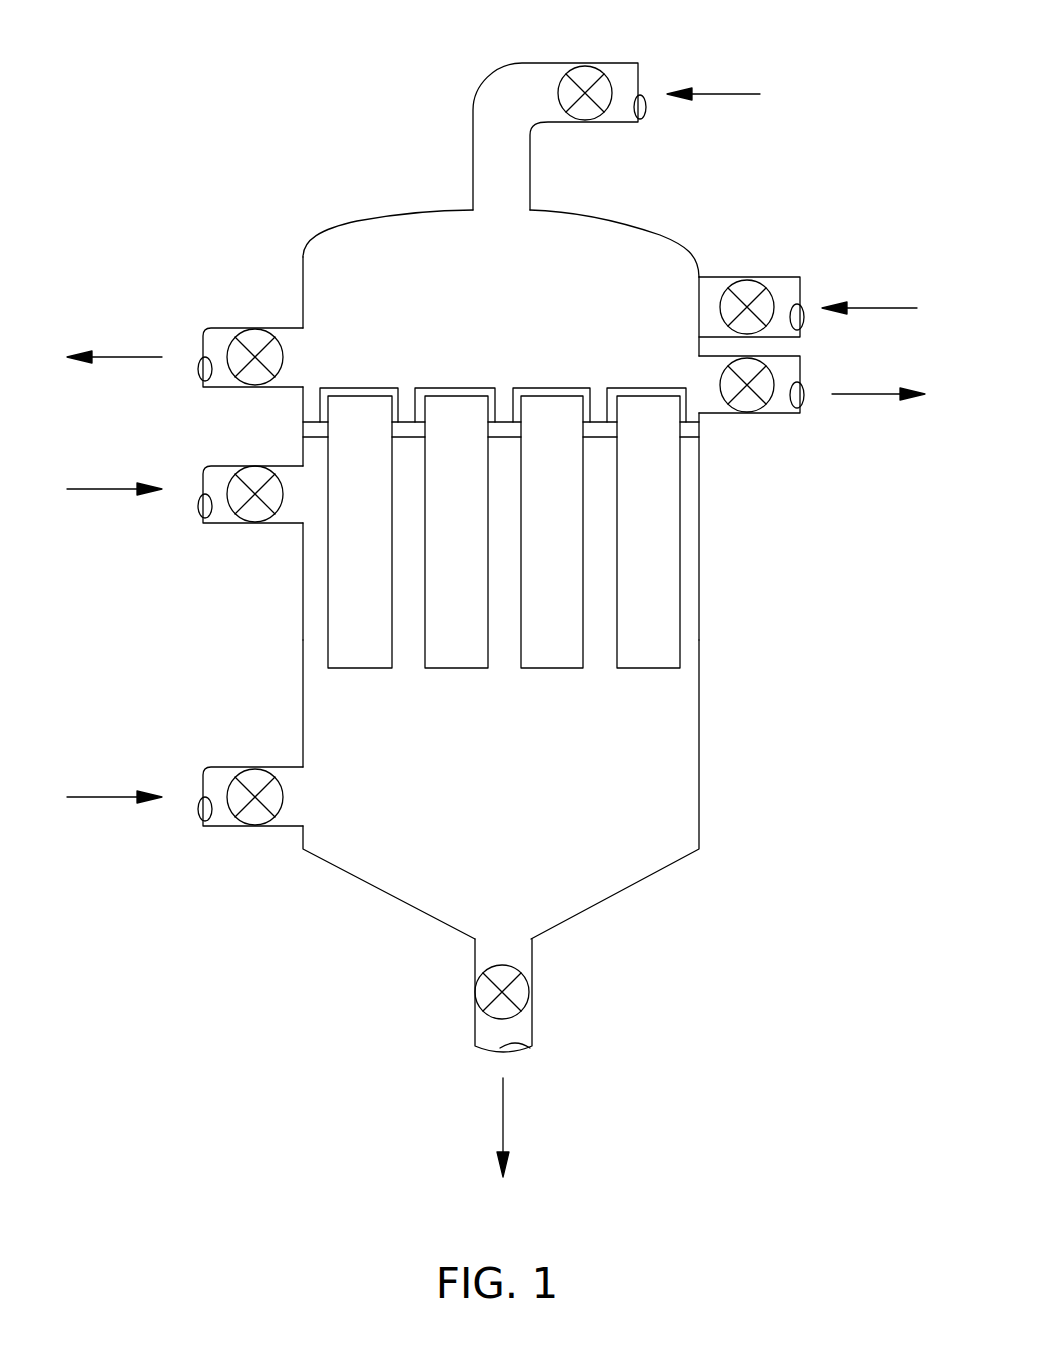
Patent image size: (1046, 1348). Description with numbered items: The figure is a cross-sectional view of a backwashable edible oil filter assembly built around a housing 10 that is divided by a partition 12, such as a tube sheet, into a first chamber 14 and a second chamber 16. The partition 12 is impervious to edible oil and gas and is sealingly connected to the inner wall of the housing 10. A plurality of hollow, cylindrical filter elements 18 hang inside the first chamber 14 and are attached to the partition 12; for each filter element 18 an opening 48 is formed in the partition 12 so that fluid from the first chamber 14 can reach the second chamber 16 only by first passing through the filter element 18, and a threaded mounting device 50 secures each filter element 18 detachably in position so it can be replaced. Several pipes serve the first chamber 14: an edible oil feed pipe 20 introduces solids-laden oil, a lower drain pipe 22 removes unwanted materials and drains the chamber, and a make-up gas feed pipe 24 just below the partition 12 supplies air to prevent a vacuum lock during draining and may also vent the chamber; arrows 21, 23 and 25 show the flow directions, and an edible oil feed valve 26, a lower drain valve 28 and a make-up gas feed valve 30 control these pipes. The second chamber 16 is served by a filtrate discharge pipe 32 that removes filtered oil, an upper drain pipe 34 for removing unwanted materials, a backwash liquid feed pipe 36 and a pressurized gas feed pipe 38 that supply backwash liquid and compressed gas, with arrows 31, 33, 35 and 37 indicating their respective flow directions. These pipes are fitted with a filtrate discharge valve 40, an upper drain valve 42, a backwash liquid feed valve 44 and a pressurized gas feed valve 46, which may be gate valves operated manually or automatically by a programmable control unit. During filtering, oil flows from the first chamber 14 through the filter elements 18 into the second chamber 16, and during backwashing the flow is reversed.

The housing 10 is at (215, 115).
The partition 12 is at (687, 442).
The first chamber 14 is at (699, 782).
The second chamber 16 is at (355, 225).
The filter elements 18 is at (358, 668).
The edible oil feed pipe 20 is at (230, 827).
The arrow 21 is at (107, 797).
The lower drain pipe 22 is at (532, 1035).
The arrow 23 is at (505, 1118).
The make-up gas feed pipe 24 is at (225, 524).
The arrow 25 is at (125, 489).
The edible oil feed valve 26 is at (254, 767).
The lower drain valve 28 is at (475, 990).
The make-up gas feed valve 30 is at (258, 466).
The arrow 31 is at (127, 357).
The filtrate discharge pipe 32 is at (228, 328).
The arrow 33 is at (888, 394).
The upper drain pipe 34 is at (786, 414).
The arrow 35 is at (720, 94).
The backwash liquid feed pipe 36 is at (490, 76).
The arrow 37 is at (880, 308).
The pressurized gas feed pipe 38 is at (786, 277).
The filtrate discharge valve 40 is at (255, 388).
The upper drain valve 42 is at (747, 418).
The backwash liquid feed valve 44 is at (587, 64).
The pressurized gas feed valve 46 is at (740, 276).
The opening 48 is at (405, 438).
The threaded mounting device 50 is at (333, 386).